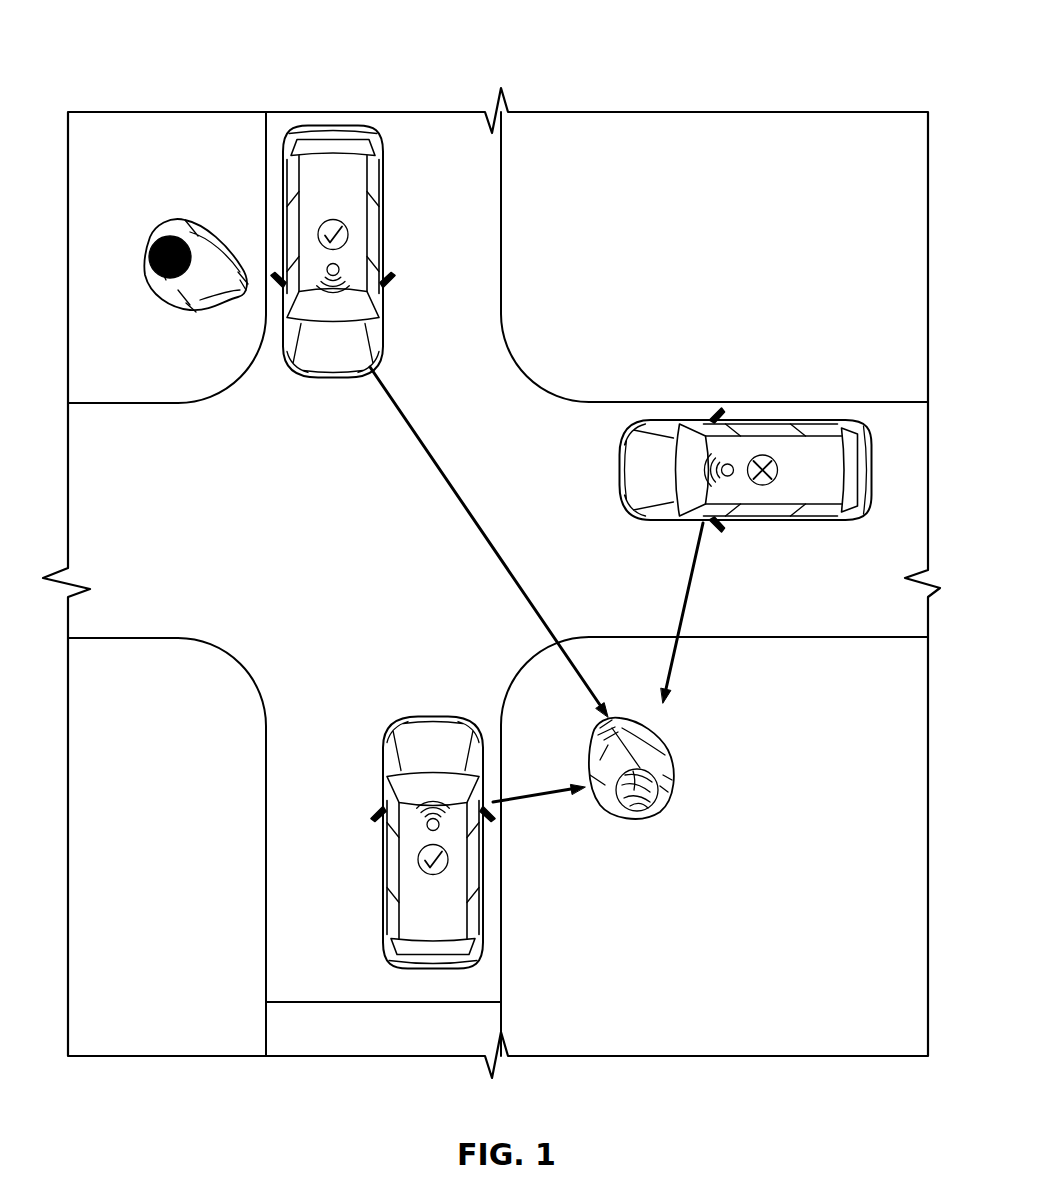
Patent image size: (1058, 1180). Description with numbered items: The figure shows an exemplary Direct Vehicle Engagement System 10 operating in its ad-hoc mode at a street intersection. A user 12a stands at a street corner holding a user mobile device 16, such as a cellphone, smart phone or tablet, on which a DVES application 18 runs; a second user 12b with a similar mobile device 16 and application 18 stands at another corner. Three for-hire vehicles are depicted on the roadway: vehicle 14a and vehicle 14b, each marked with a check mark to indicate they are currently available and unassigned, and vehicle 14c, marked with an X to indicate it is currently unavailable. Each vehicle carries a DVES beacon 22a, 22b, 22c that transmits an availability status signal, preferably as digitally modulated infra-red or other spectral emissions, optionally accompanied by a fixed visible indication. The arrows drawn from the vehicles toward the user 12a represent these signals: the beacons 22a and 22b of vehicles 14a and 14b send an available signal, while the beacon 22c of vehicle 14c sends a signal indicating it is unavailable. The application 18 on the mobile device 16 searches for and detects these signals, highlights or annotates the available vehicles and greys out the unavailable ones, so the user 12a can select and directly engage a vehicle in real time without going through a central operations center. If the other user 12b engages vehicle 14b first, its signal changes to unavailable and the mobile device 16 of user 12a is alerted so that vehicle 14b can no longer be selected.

The Direct Vehicle Engagement System 10 is at (885, 53).
The user 12a is at (640, 820).
The another user 12b is at (187, 222).
The vehicle 14a is at (382, 908).
The vehicle 14b is at (386, 186).
The vehicle 14c is at (813, 522).
The user mobile device 16 is at (240, 300).
The DVES application 18 is at (190, 310).
The DVES beacon 22a is at (427, 826).
The DVES beacon 22b is at (340, 268).
The DVES beacon 22c is at (732, 462).